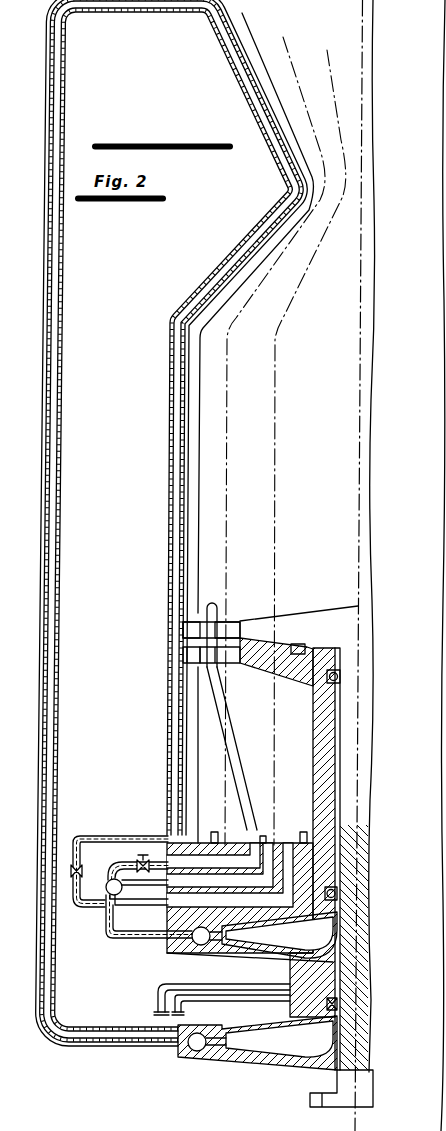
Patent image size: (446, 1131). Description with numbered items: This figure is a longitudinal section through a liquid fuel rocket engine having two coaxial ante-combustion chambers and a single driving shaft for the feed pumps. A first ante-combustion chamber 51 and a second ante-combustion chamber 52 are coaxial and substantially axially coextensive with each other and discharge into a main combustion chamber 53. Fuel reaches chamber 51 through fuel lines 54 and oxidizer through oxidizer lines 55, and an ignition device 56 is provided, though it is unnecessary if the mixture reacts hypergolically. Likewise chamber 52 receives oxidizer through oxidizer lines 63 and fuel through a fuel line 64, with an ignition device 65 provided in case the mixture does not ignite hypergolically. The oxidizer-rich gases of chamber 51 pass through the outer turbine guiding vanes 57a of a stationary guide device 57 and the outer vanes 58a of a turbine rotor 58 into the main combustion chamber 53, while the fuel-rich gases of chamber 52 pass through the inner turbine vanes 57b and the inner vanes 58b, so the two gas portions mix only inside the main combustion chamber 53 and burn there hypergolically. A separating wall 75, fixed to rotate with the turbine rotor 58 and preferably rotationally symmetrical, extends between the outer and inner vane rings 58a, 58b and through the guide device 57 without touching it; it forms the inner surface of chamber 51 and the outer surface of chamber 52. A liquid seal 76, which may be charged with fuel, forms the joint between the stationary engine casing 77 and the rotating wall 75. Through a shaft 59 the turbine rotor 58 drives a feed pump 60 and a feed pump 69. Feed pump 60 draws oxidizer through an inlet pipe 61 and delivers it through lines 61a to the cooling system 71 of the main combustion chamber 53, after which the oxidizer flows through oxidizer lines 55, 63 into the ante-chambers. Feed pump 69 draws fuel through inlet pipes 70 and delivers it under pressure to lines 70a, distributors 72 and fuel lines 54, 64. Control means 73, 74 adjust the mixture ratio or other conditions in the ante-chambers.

The first ante-combustion chamber 51 is at (218, 751).
The second ante-combustion chamber 52 is at (300, 737).
The main combustion chamber 53 is at (330, 308).
The fuel lines 54 is at (214, 830).
The oxidizer lines 55 is at (210, 833).
The ignition device 56 is at (246, 838).
The stationary guide device 57 is at (282, 642).
The outer turbine guiding vanes 57a is at (190, 652).
The inner turbine vanes 57b is at (228, 670).
The turbine rotor 58 is at (443, 630).
The outer vanes of turbine rotor 58a is at (182, 623).
The inner vanes of turbine rotor 58b is at (232, 623).
The shaft 59 is at (372, 783).
The feed pump 60 is at (330, 1050).
The inlet pipe 61 is at (443, 1102).
The lines 61a is at (66, 730).
The oxidizer lines 63 is at (288, 840).
The fuel line 64 is at (263, 834).
The ignition device 65 is at (302, 830).
The feed pump 69 is at (345, 935).
The inlet pipes 70 is at (157, 1012).
The lines 70a is at (115, 940).
The cooling system 71 is at (176, 366).
The distributors 72 is at (105, 893).
The control means 73 is at (78, 835).
The control means 74 is at (143, 855).
The separating wall 75 is at (212, 604).
The liquid seal 76 is at (243, 865).
The stationary engine casing 77 is at (178, 918).